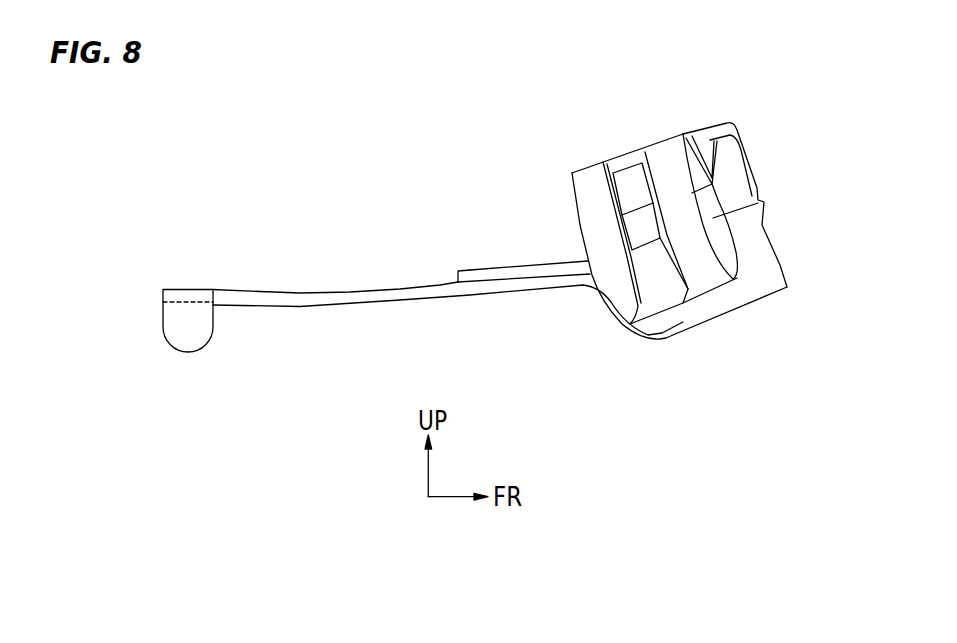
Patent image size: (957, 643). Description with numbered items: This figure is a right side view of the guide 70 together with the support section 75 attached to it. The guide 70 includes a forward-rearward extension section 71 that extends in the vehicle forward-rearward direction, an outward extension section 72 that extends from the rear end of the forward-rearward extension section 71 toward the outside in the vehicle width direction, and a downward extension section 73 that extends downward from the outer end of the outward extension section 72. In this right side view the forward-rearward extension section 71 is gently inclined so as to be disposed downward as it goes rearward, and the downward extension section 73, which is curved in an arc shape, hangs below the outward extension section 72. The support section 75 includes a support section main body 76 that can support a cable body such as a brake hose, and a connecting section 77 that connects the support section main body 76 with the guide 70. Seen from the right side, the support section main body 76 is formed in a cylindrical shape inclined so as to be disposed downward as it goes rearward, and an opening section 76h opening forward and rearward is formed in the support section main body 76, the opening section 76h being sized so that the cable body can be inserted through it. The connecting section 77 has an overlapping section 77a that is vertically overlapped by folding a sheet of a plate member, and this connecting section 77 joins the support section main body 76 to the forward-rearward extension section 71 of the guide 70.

The guide 70 is at (304, 292).
The forward-rearward extension section 71 is at (393, 288).
The outward extension section 72 is at (186, 296).
The downward extension section 73 is at (183, 340).
The support section 75 is at (660, 130).
The support section main body 76 is at (585, 175).
The opening section 76h is at (704, 200).
The connecting section 77 is at (545, 270).
The overlapping section 77a is at (487, 268).